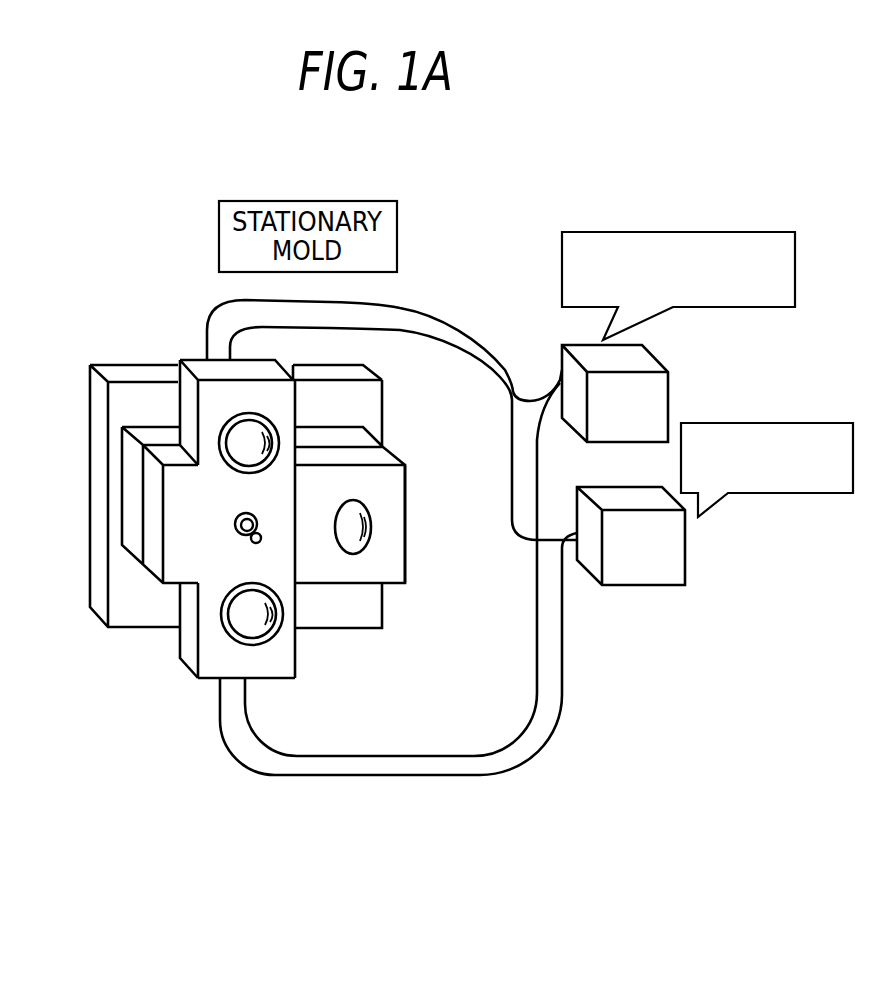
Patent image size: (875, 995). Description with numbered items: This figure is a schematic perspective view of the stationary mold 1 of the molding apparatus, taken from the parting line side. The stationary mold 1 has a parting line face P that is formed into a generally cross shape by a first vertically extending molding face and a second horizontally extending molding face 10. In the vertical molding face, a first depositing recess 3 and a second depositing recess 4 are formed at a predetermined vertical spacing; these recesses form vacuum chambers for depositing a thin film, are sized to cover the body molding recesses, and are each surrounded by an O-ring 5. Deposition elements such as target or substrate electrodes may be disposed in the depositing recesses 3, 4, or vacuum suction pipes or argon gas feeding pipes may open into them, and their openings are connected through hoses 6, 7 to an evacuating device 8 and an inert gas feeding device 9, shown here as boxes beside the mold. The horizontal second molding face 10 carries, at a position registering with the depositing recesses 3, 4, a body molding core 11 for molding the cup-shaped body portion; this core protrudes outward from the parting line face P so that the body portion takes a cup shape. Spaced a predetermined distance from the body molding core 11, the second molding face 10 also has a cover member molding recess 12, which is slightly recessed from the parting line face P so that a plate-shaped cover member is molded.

The stationary mold 1 is at (459, 236).
The first depositing recess 3 is at (237, 430).
The second depositing recess 4 is at (245, 623).
The O-ring 5 is at (220, 435).
The hose 6 is at (432, 342).
The hose 7 is at (474, 327).
The evacuating device 8 is at (688, 558).
The inert gas feeding device 9 is at (672, 397).
The second molding face 10 is at (397, 573).
The body molding core 11 is at (248, 548).
The cover member molding recess 12 is at (372, 530).
The parting line face P is at (397, 481).